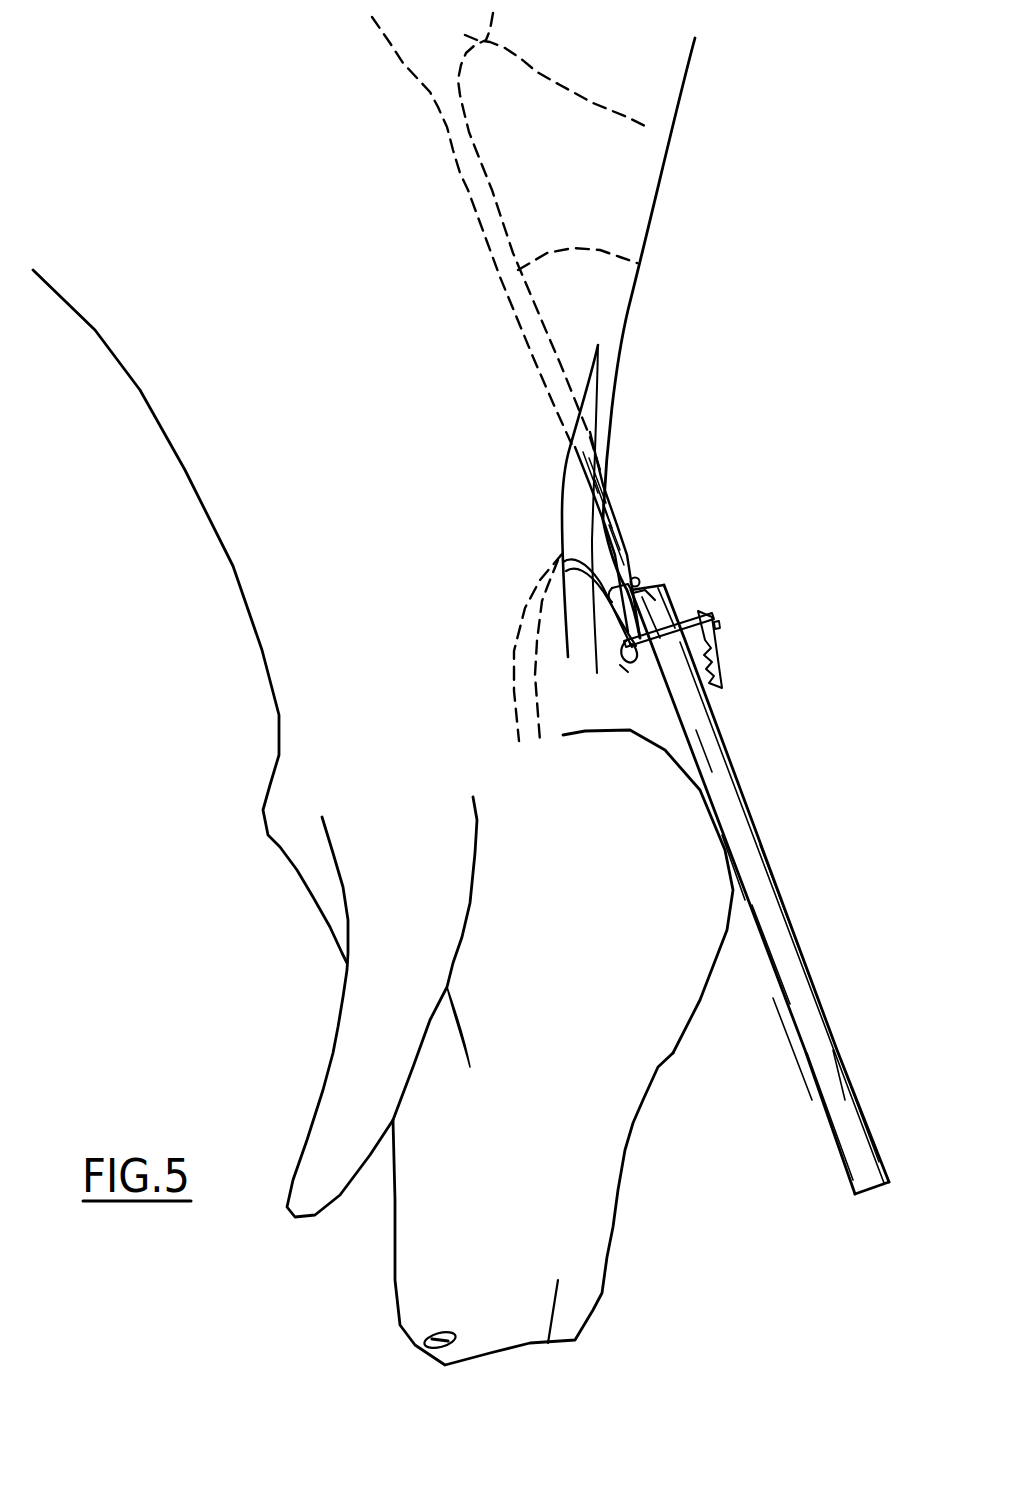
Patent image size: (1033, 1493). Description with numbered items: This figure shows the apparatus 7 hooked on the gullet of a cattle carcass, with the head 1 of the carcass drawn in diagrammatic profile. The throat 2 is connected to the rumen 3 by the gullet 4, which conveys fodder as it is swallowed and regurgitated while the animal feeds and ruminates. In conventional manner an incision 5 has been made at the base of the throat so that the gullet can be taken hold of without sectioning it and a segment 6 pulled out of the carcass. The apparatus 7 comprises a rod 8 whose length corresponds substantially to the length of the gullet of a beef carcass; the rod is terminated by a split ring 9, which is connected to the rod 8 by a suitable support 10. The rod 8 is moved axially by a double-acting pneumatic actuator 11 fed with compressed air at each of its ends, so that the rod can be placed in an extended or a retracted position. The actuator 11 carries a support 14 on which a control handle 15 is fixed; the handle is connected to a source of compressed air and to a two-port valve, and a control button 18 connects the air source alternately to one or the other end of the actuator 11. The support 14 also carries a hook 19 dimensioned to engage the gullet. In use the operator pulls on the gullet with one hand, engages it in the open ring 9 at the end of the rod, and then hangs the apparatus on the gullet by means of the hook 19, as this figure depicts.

The head 1 is at (590, 1097).
The throat 2 is at (353, 817).
The rumen 3 is at (645, 125).
The gullet 4 is at (637, 263).
The incision 5 is at (592, 396).
The segment 6 is at (600, 462).
The apparatus 7 is at (803, 785).
The rod 8 is at (662, 610).
The split ring 9 is at (630, 578).
The support 10 is at (640, 582).
The double-acting pneumatic actuator 11 is at (755, 889).
The support 14 is at (700, 612).
The control handle 15 is at (703, 640).
The control button 18 is at (718, 625).
The hook 19 is at (630, 658).